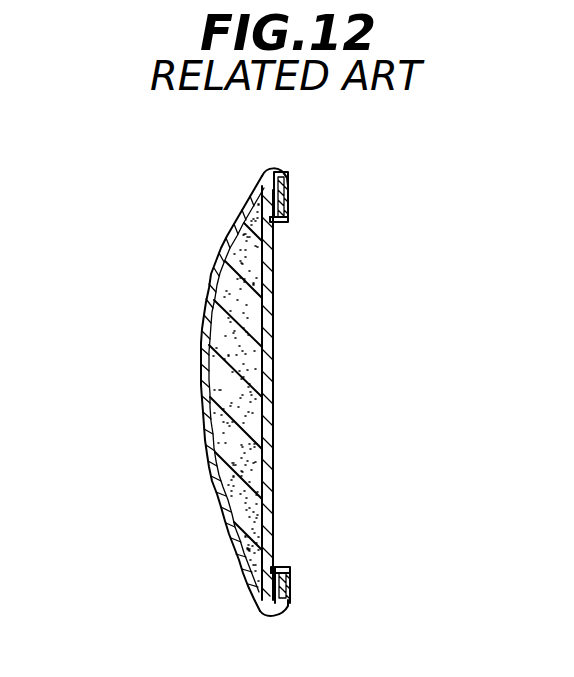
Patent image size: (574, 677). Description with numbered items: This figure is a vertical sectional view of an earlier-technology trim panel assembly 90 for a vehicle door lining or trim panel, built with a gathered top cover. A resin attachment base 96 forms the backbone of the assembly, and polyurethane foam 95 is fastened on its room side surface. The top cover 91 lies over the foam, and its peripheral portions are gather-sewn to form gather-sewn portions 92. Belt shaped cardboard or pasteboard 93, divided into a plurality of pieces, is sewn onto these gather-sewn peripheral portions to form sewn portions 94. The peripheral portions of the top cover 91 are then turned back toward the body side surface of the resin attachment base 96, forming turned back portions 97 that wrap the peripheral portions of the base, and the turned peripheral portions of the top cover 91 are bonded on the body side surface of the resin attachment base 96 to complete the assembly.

The trim panel assembly 90 is at (168, 387).
The top cover 91 is at (203, 311).
The gather-sewn portions 92 is at (287, 188).
The belt shaped cardboard or pasteboard 93 is at (278, 224).
The sewn portions 94 is at (290, 210).
The polyurethane foam 95 is at (207, 450).
The resin attachment base 96 is at (273, 383).
The turned back portions 97 is at (267, 168).